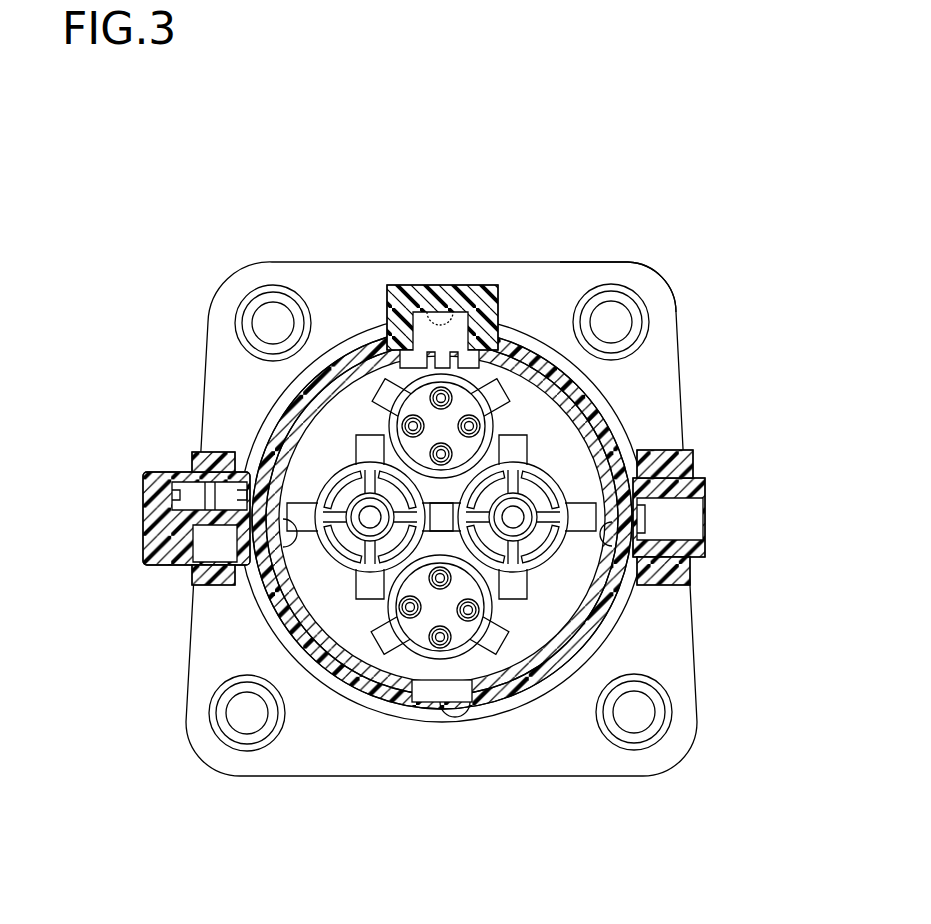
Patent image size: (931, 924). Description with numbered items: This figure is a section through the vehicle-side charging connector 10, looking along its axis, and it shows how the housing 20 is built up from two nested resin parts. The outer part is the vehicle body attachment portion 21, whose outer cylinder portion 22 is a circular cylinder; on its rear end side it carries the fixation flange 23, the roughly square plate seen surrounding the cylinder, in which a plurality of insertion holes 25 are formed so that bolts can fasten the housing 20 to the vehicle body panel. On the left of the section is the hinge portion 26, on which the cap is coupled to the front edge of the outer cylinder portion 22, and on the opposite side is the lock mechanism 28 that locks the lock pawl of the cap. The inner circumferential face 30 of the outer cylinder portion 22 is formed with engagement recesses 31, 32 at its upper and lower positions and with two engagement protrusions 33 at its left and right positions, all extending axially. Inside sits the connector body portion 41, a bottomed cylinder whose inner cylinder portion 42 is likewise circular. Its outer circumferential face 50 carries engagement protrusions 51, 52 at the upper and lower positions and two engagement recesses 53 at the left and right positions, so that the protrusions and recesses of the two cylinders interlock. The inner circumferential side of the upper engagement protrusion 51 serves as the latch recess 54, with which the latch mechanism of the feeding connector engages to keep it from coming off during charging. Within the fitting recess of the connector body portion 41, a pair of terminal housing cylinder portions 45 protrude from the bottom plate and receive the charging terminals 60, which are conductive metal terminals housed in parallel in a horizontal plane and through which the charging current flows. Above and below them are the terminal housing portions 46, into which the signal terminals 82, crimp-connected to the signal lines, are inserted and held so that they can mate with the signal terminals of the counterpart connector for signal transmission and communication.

The connector 10 is at (381, 466).
The housing 20 is at (441, 477).
The vehicle body attachment portion 21 is at (306, 250).
The outer cylinder portion 22 is at (600, 413).
The fixation flange 23 is at (578, 264).
The insertion holes 25 is at (271, 321).
The hinge portion 26 is at (143, 550).
The lock mechanism 28 is at (704, 540).
The inner circumferential face 30 is at (496, 526).
The engagement recess 31 is at (400, 376).
The engagement recess 32 is at (443, 702).
The engagement protrusions 33 is at (363, 527).
The connector body portion 41 is at (326, 333).
The inner cylinder portion 42 is at (337, 690).
The terminal housing cylinder portions 45 is at (446, 485).
The terminal housing portions 46 is at (385, 350).
The outer circumferential face 50 is at (527, 703).
The engagement protrusion 51 is at (446, 259).
The engagement protrusion 52 is at (437, 702).
The engagement recesses 53 is at (250, 455).
The latch recess 54 is at (463, 318).
The charging terminals 60 is at (290, 592).
The signal terminals 82 is at (412, 427).